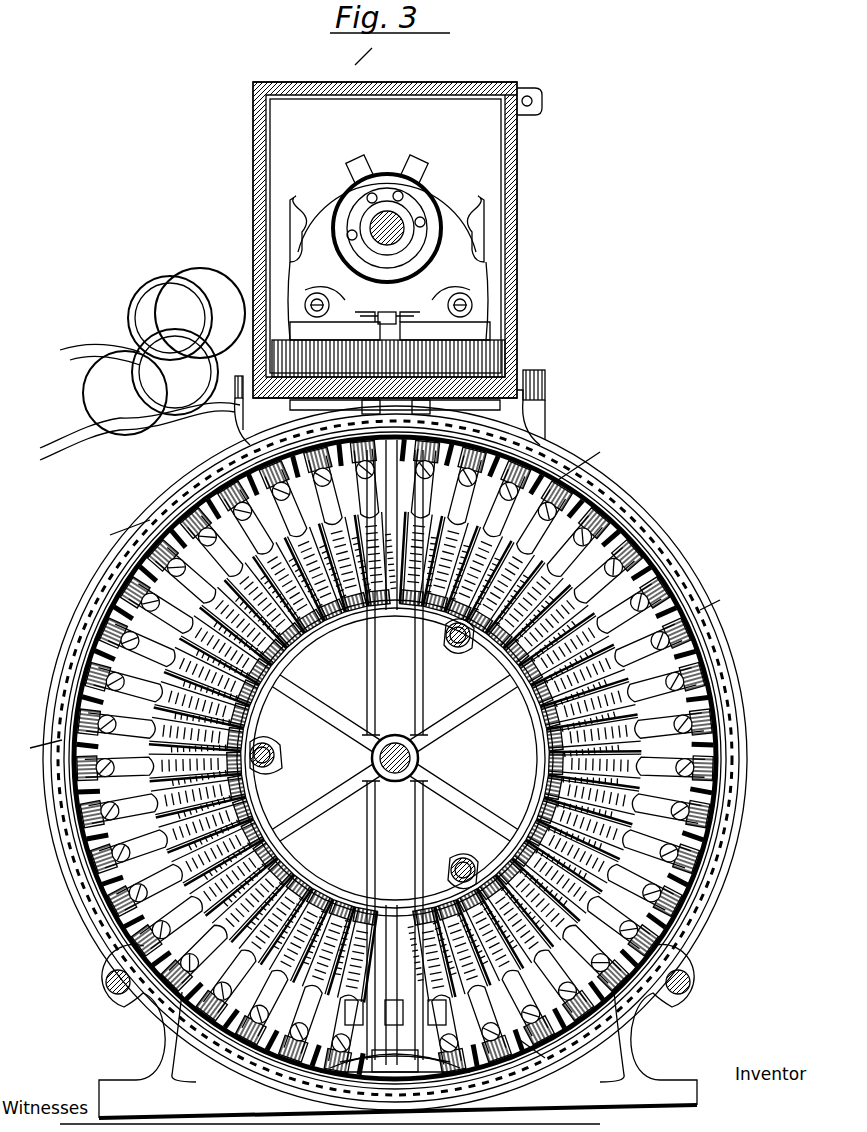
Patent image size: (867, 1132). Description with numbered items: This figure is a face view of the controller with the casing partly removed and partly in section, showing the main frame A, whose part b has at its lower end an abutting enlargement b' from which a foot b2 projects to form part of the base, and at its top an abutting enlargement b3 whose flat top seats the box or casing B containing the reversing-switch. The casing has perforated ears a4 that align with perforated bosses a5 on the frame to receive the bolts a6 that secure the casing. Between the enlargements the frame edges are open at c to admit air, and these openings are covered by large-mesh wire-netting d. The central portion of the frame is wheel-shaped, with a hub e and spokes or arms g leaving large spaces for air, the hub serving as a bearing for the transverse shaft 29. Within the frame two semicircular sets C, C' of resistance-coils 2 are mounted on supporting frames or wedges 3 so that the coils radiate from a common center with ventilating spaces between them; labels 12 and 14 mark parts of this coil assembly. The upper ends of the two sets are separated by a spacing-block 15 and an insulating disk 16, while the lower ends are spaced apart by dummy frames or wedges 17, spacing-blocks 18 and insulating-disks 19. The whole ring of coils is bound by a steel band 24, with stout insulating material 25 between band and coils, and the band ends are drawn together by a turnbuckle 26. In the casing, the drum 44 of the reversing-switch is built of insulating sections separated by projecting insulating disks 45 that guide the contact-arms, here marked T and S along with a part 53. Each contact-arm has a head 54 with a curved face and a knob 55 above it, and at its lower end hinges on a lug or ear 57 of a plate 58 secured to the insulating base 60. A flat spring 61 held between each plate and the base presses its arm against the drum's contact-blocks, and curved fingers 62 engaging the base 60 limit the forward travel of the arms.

The resistance-coils 2 is at (395, 757).
The supporting frames or wedges 3 is at (373, 753).
The coil clamp 12 is at (341, 747).
The coil clamp 14 is at (525, 1018).
The spacing-block 15 is at (389, 484).
The disk of insulating material 16 is at (395, 525).
The dummy frames or wedges 17 is at (372, 1042).
The spacing-blocks 18 is at (395, 985).
The insulating-disks 19 is at (395, 1052).
The steel band 24 is at (245, 1038).
The insulating material 25 is at (268, 1048).
The turnbuckle 26 is at (395, 1078).
The transverse shaft 29 is at (380, 760).
The drum 44 is at (387, 189).
The disk of insulating material 45 is at (360, 190).
The contact arm 53 is at (305, 178).
The head 54 is at (302, 222).
The knob 55 is at (411, 169).
The lug or ear 57 is at (340, 284).
The plate 58 is at (390, 326).
The base 60 is at (388, 358).
The flat spring 61 is at (393, 300).
The curved fingers 62 is at (387, 312).
The main frame A is at (395, 758).
The box or casing B is at (397, 248).
The semicircular set of resistance-coils C is at (395, 758).
The semicircular set of resistance-coils C' is at (487, 754).
The hub e is at (418, 756).
The spokes or arms g is at (395, 758).
The perforated ears a4 is at (565, 380).
The perforated bosses a5 is at (575, 404).
The bolts a6 is at (385, 374).
The frame part b is at (395, 758).
The abutting enlargement b' is at (398, 1000).
The foot b2 is at (378, 1034).
The abutting enlargement b3 is at (565, 432).
The openings c is at (95, 700).
The wire-netting d is at (120, 655).
The contact hook S is at (477, 217).
The contact hook T is at (294, 222).